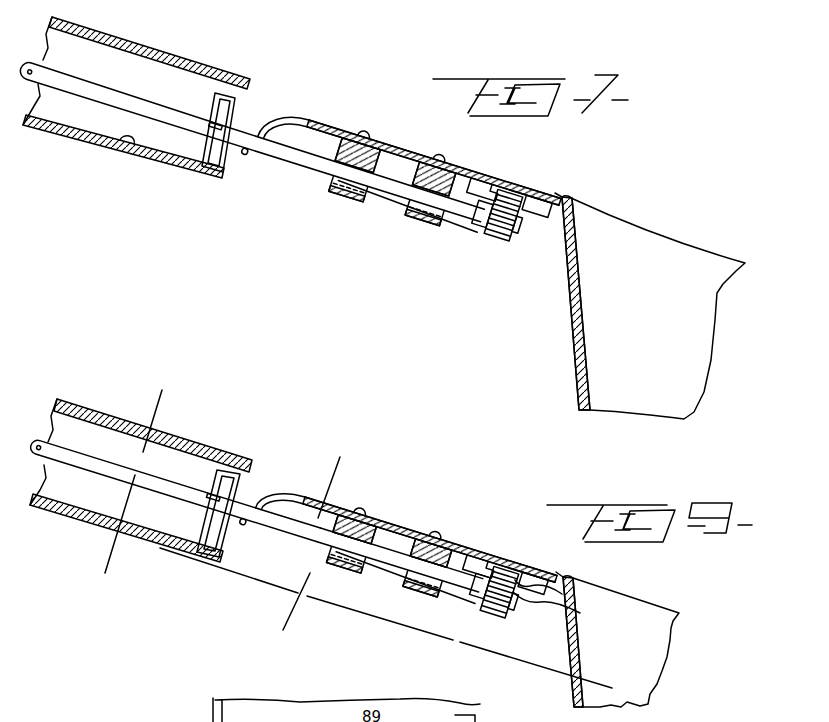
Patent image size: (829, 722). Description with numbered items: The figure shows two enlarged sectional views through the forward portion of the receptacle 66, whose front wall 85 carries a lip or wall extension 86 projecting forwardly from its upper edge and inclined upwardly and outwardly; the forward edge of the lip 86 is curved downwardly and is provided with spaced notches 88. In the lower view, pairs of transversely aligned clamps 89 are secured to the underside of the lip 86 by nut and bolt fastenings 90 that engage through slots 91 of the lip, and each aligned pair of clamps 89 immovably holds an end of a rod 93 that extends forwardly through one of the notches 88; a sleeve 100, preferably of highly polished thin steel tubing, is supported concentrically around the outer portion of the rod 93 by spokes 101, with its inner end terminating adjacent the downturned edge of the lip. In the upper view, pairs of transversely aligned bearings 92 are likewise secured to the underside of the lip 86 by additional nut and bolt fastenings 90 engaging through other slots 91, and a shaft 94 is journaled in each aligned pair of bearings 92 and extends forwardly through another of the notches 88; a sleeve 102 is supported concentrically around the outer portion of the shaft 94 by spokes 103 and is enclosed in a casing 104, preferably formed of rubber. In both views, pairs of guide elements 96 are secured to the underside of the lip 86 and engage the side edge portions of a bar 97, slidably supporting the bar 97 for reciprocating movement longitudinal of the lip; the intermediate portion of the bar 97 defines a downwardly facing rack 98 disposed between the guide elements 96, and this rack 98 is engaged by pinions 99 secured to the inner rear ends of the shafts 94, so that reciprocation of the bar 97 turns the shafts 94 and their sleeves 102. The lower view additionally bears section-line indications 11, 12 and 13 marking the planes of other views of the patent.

In FIG. 7, the casing 104 is at (186, 62).
In FIG. 7, the spokes 103 is at (208, 155).
In FIG. 7, the sleeve 102 is at (127, 149).
In FIG. 7, the shaft 94 is at (305, 156).
In FIG. 9, the shaft 94 is at (480, 586).
In FIG. 7, the notches 88 is at (285, 113).
In FIG. 9, the notches 88 is at (272, 490).
In FIG. 7, the lip or wall extension 86 is at (334, 121).
In FIG. 9, the lip or wall extension 86 is at (404, 522).
In FIG. 7, the nut and bolt fastenings 90 is at (443, 157).
In FIG. 7, the slots 91 is at (424, 157).
In FIG. 7, the bearings 92 is at (393, 221).
In FIG. 7, the guide elements 96 is at (543, 192).
In FIG. 9, the guide elements 96 is at (473, 558).
In FIG. 7, the bar 97 is at (480, 209).
In FIG. 9, the bar 97 is at (562, 594).
In FIG. 7, the rack 98 is at (540, 208).
In FIG. 9, the rack 98 is at (580, 613).
In FIG. 7, the pinions 99 is at (503, 241).
In FIG. 9, the pinions 99 is at (510, 613).
In FIG. 7, the front wall 85 is at (584, 343).
In FIG. 9, the front wall 85 is at (580, 639).
In FIG. 7, the receptacle 66 is at (719, 352).
In FIG. 9, the receptacle 66 is at (679, 632).
In FIG. 9, the sleeve 100 is at (77, 408).
In FIG. 9, the spokes 101 is at (203, 525).
In FIG. 9, the rod 93 is at (267, 514).
In FIG. 9, the clamps 89 is at (415, 579).
In FIG. 9, the section line 13- 13 is at (171, 408).
In FIG. 9, the section line 12- 12 is at (348, 473).
In FIG. 9, the section line 11- 11 is at (54, 525).